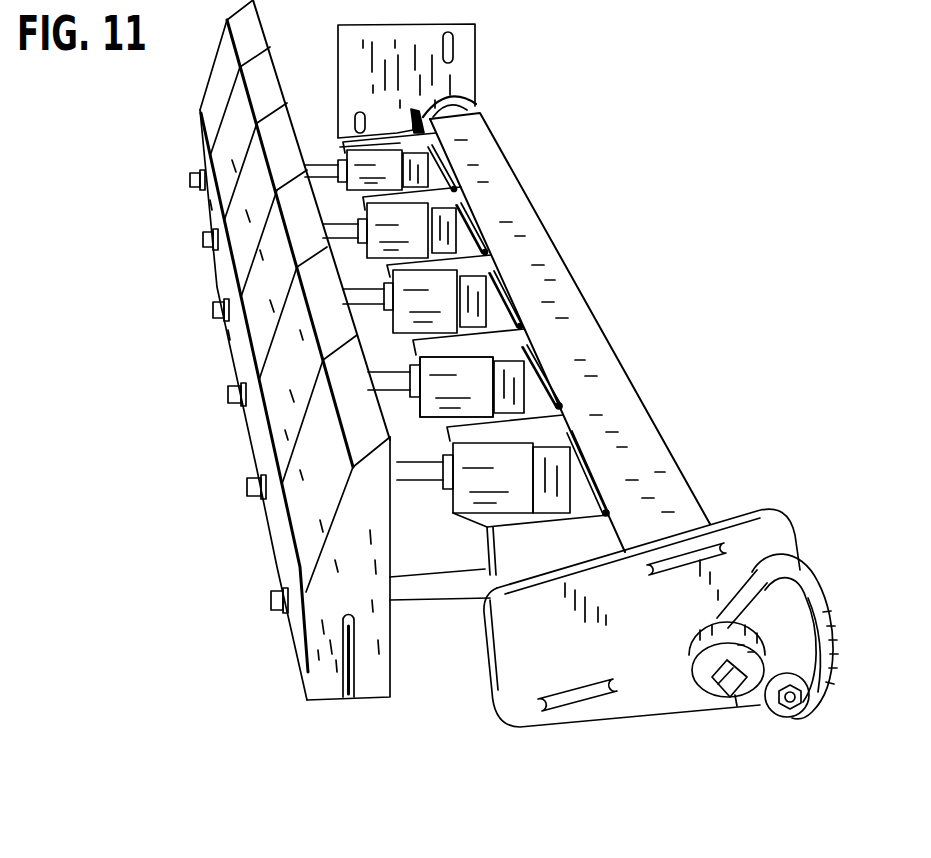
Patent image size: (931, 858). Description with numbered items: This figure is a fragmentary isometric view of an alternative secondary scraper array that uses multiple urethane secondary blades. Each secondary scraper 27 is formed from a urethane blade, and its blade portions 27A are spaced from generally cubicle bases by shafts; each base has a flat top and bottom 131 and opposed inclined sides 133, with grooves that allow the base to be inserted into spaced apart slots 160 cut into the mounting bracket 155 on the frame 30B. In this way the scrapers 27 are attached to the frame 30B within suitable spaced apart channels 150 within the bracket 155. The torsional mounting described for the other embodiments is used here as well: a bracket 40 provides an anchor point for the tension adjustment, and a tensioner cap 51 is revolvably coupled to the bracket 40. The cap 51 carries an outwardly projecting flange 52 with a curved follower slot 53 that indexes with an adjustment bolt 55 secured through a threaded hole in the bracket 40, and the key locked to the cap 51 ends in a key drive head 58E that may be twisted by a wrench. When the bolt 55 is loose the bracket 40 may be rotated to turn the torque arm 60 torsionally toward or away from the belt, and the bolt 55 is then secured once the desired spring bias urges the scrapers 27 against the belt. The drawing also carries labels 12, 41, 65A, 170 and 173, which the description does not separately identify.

The harvester assembly 12 is at (420, 656).
The secondary scraper 27 is at (199, 127).
The blade portions 27A is at (313, 632).
The frame 30B is at (505, 150).
The bracket 40 is at (640, 697).
The slots 41 is at (762, 520).
The tensioner cap 51 is at (682, 668).
The flange 52 is at (800, 556).
The follower slot 53 is at (806, 611).
The adjustment bolt 55 is at (800, 715).
The key drive head 58E is at (737, 705).
The torque arm 60 is at (509, 218).
The arch clamp 65A is at (458, 102).
The flat top and bottom 131 is at (512, 345).
The inclined sides 133 is at (480, 383).
The channels 150 is at (518, 277).
The bracket 155 is at (590, 457).
The slots 160 is at (557, 410).
The bolts 170 is at (268, 602).
The bolt 173 is at (272, 596).